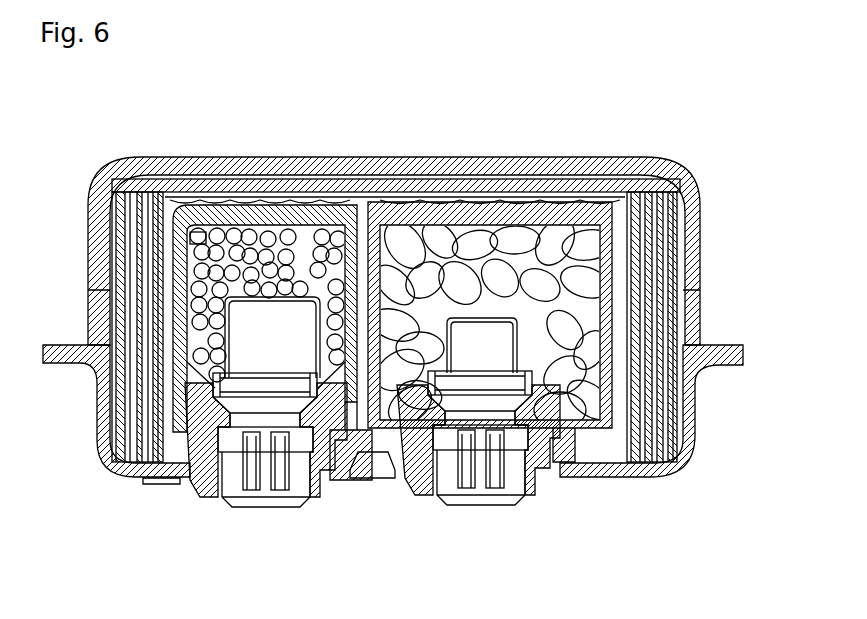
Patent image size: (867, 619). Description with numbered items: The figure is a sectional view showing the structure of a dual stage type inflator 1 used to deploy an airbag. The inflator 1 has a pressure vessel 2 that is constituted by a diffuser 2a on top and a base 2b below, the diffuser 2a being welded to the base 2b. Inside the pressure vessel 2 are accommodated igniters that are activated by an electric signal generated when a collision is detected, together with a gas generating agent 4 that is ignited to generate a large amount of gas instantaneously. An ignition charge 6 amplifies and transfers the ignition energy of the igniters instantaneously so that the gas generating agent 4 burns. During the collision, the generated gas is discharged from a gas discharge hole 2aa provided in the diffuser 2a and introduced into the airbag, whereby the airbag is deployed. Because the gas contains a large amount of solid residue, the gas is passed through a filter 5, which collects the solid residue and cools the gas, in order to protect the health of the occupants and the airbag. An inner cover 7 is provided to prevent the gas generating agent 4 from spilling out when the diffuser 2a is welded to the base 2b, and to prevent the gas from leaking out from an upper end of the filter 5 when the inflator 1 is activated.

The dual stage type inflator 1 is at (274, 123).
The pressure vessel 2 is at (722, 332).
The diffuser 2a is at (697, 234).
The gas discharge hole 2aa is at (96, 275).
The base 2b is at (692, 421).
The gas generating agent 4 is at (462, 262).
The filter 5 is at (650, 192).
The ignition charge 6 is at (228, 224).
The inner cover 7 is at (378, 191).